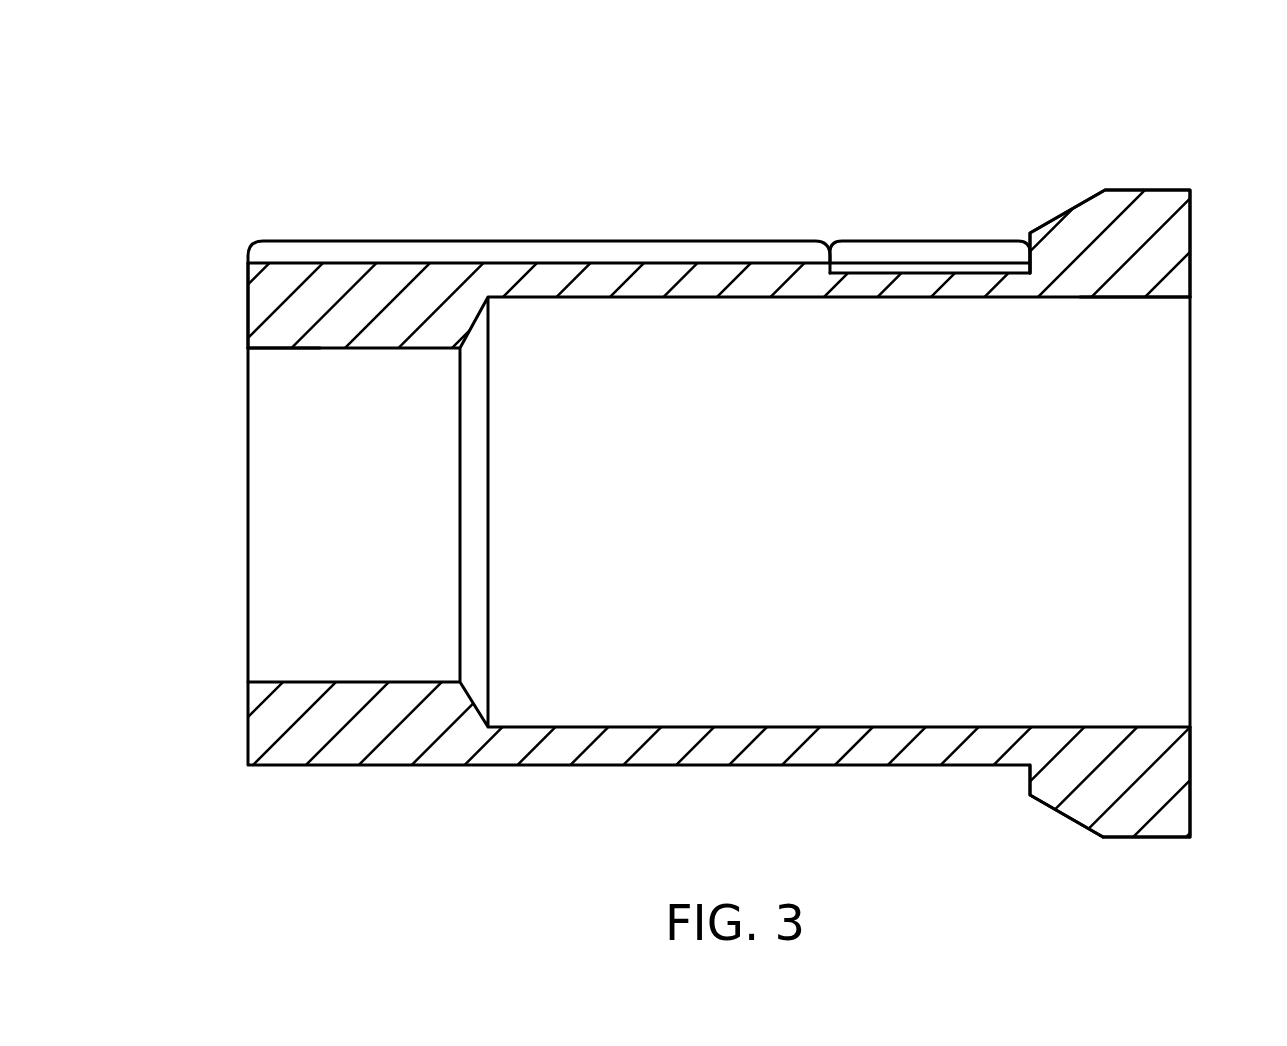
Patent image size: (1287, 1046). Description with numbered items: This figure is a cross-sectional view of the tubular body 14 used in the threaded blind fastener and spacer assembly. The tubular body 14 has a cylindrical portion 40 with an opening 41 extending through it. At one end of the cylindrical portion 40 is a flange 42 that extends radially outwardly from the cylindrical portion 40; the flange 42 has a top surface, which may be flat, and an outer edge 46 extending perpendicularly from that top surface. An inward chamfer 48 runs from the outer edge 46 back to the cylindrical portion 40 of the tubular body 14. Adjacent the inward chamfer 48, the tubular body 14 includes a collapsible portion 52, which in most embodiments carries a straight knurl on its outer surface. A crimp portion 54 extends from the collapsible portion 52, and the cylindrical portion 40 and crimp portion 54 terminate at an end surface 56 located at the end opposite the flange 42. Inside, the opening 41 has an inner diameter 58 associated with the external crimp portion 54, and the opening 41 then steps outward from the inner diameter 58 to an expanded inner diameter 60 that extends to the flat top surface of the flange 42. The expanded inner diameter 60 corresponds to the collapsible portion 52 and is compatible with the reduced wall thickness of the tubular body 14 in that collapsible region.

The tubular body 14 is at (953, 152).
The cylindrical portion 40 is at (370, 793).
The opening 41 is at (338, 607).
The flange 42 is at (1167, 853).
The outer edge 46 is at (1150, 190).
The inward chamfer 48 is at (1063, 817).
The collapsible portion 52 is at (934, 241).
The crimp portion 54 is at (608, 241).
The end surface 56 is at (248, 290).
The inner diameter 58 is at (292, 348).
The expanded inner diameter 60 is at (1110, 297).